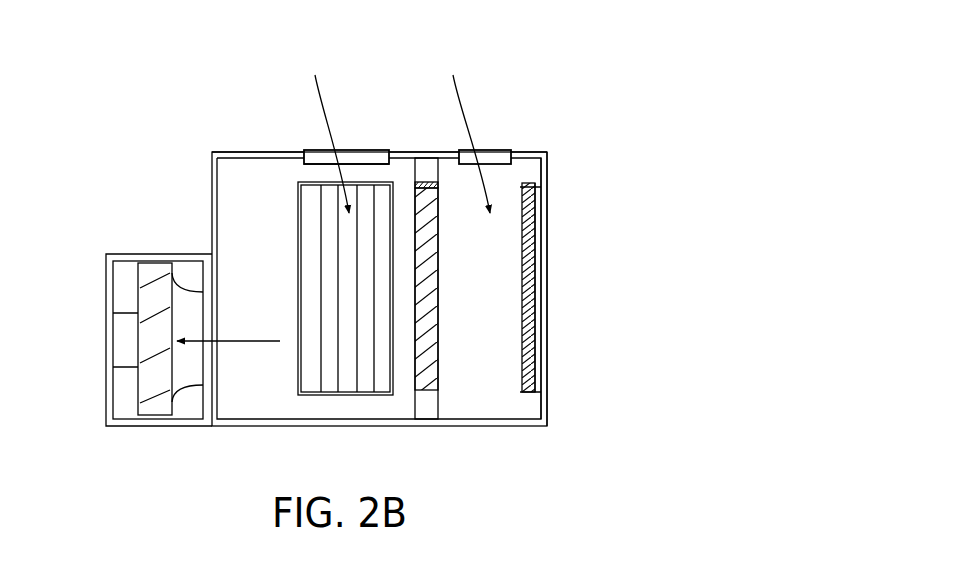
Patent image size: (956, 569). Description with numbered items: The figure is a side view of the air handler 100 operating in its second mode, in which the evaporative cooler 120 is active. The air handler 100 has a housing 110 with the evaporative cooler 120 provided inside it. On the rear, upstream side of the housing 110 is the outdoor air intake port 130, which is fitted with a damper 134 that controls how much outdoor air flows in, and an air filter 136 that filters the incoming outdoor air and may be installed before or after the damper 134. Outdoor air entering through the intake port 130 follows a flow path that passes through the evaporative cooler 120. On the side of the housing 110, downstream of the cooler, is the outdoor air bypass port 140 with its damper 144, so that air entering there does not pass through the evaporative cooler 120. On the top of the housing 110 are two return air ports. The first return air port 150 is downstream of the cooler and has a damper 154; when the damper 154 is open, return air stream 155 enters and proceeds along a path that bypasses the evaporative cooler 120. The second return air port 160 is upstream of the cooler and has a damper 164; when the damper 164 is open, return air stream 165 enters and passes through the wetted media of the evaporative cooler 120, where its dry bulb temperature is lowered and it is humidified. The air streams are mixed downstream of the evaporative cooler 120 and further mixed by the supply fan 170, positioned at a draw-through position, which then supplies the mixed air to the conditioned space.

The air handler 100 is at (548, 80).
The housing 110 is at (478, 428).
The evaporative cooler 120 is at (446, 360).
The outdoor air intake port 130 is at (553, 328).
The damper 134 is at (545, 248).
The air filter 136 is at (535, 290).
The outdoor air bypass port 140 is at (296, 245).
The damper 144 is at (312, 292).
The first return air port 150 is at (311, 146).
The damper 154 is at (372, 158).
The return air stream 155 is at (323, 80).
The second return air port 160 is at (503, 148).
The damper 164 is at (465, 158).
The return air stream 165 is at (460, 82).
The supply fan 170 is at (130, 389).